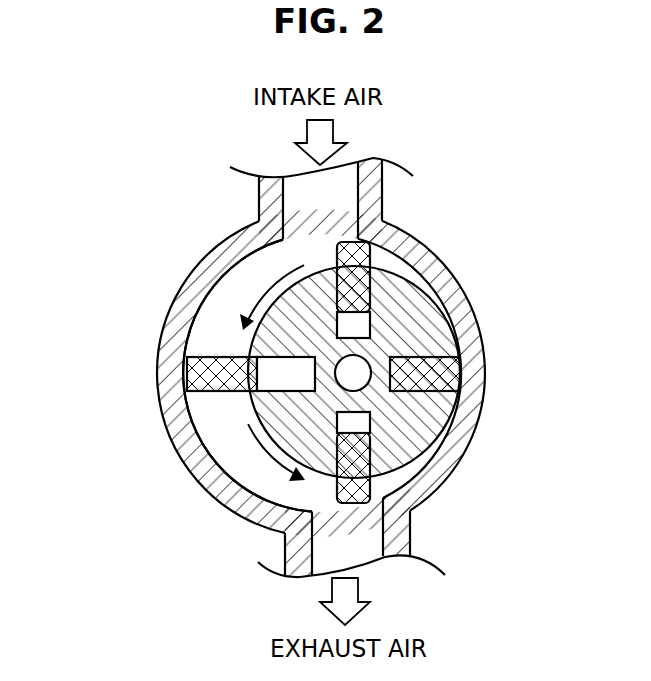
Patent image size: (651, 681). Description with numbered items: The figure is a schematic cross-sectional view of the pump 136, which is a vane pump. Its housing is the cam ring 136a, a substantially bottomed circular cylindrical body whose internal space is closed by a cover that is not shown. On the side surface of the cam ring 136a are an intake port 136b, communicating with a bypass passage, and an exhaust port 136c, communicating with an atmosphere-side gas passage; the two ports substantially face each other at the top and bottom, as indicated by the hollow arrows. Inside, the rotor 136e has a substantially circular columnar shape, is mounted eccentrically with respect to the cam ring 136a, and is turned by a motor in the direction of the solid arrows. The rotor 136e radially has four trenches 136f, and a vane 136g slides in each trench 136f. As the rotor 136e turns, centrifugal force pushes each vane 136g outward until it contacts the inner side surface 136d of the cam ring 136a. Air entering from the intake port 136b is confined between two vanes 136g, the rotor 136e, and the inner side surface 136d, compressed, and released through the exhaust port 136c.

The pump 136 is at (72, 154).
The cam ring 136a is at (192, 272).
The intake port 136b is at (291, 203).
The exhaust port 136c is at (322, 533).
The inner side surface 136d is at (195, 410).
The rotor 136e is at (428, 429).
The trench 136f is at (357, 324).
The vane 136g is at (362, 254).